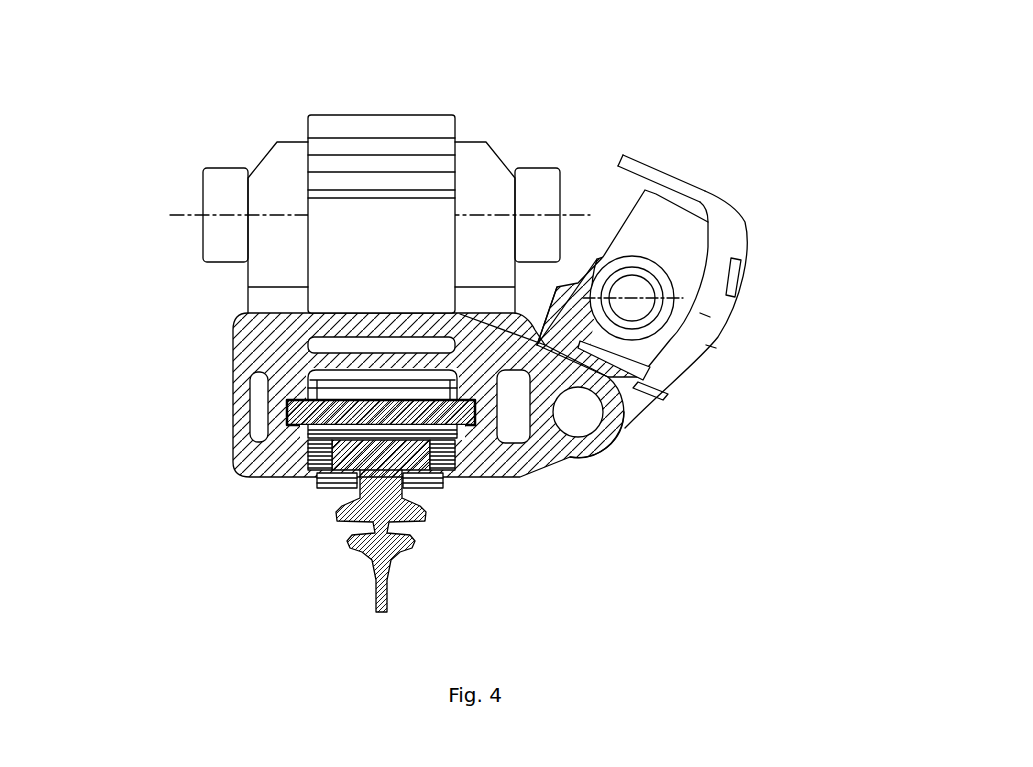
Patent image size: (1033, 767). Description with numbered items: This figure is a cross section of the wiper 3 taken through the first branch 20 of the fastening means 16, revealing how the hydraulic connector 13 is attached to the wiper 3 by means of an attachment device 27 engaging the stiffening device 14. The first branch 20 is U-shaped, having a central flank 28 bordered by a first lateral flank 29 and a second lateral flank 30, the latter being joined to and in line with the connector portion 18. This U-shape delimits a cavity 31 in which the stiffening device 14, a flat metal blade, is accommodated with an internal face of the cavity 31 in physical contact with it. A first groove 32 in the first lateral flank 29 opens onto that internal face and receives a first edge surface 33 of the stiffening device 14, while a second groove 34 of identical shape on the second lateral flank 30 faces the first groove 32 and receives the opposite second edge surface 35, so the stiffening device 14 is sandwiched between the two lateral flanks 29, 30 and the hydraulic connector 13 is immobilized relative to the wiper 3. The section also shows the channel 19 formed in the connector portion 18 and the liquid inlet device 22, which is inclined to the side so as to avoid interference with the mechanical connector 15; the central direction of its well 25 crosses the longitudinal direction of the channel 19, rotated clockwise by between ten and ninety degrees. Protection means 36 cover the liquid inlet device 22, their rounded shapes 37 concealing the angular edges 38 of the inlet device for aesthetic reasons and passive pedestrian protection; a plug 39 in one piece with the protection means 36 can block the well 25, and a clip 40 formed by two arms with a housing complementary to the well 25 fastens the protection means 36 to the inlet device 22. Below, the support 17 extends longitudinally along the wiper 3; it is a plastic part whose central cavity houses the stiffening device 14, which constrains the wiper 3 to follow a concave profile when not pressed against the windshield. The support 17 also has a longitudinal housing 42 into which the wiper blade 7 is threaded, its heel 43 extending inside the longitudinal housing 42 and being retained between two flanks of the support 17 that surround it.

The wiper 3 is at (213, 565).
The wiper blade 7 is at (370, 567).
The hydraulic connector 13 is at (640, 448).
The stiffening device 14 is at (455, 478).
The mechanical connector 15 is at (368, 125).
The fastening means 16 is at (266, 486).
The support 17 is at (312, 485).
The connector portion 18 is at (613, 443).
The channel 19 is at (583, 410).
The first branch 20 is at (250, 310).
The liquid inlet device 22 is at (617, 200).
The well 25 is at (670, 255).
The attachment device 27 is at (280, 409).
The central flank 28 is at (375, 360).
The first lateral flank 29 is at (305, 397).
The second lateral flank 30 is at (537, 370).
The cavity 31 is at (252, 470).
The first groove 32 is at (300, 428).
The first edge surface 33 is at (302, 366).
The second groove 34 is at (524, 452).
The second edge surface 35 is at (557, 287).
The protection means 36 is at (762, 272).
The rounded shapes 37 is at (740, 203).
The angular edges 38 is at (684, 186).
The plug 39 is at (656, 190).
The clip 40 is at (670, 362).
The longitudinal housing 42 is at (320, 486).
The heel 43 is at (420, 489).